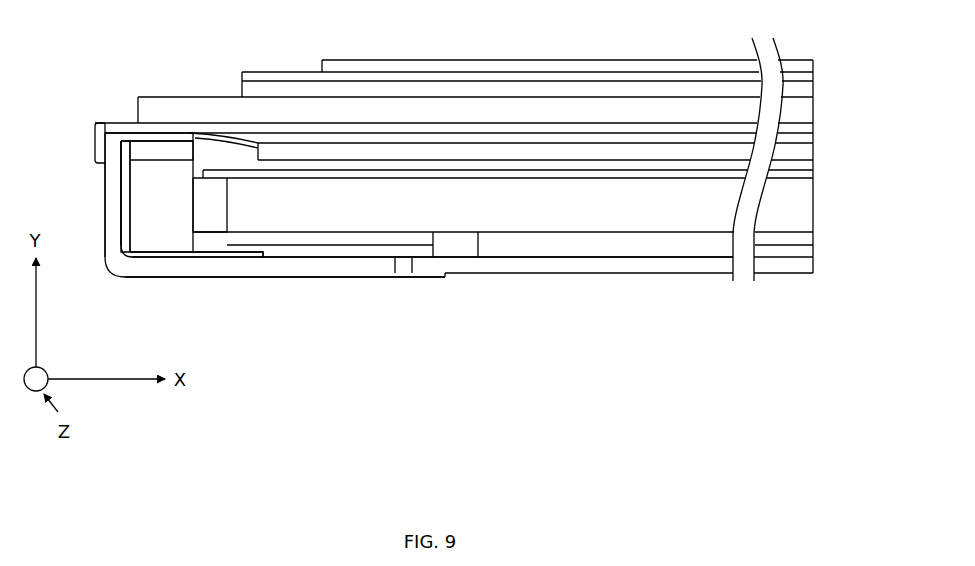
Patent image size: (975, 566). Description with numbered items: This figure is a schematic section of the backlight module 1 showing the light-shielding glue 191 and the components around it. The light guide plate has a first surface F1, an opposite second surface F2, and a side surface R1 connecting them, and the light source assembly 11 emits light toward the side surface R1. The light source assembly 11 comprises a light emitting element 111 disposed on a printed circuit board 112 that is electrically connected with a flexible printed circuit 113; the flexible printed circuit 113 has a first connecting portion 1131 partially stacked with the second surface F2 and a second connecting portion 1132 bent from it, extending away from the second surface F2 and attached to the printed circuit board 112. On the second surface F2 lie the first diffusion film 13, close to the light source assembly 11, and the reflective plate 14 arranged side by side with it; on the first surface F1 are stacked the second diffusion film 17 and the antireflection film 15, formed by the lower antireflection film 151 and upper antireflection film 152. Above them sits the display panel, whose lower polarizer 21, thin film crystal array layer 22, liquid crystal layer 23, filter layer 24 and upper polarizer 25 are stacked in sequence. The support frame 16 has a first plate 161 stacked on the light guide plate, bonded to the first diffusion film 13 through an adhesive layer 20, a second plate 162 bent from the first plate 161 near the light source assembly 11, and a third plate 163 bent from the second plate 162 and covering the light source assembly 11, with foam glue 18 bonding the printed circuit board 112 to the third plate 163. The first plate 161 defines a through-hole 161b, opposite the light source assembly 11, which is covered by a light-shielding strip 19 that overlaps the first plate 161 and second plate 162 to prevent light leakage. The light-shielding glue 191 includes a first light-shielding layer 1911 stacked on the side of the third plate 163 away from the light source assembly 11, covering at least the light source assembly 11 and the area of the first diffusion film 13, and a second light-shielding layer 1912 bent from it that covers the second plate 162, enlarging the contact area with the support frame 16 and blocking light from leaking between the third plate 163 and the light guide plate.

The backlight module 1 is at (832, 245).
The light source assembly 11 is at (260, 332).
The light emitting element 111 is at (205, 227).
The printed circuit board 112 is at (155, 227).
The flexible printed circuit 113 is at (238, 255).
The first connecting portion 1131 is at (138, 254).
The second connecting portion 1132 is at (128, 192).
The first diffusion film 13 is at (288, 236).
The reflective plate 14 is at (650, 240).
The antireflection film 15 is at (878, 140).
The lower antireflection film 151 is at (805, 164).
The upper antireflection film 152 is at (805, 148).
The support frame 16 is at (112, 270).
The first plate 161 is at (358, 268).
The through-hole 161b is at (397, 262).
The second plate 162 is at (104, 205).
The third plate 163 is at (165, 140).
The second diffusion film 17 is at (815, 176).
The foam glue 18 is at (133, 152).
The light-shielding strip 19 is at (425, 275).
The light-shielding glue 191 is at (67, 79).
The first light-shielding layer 1911 is at (131, 127).
The second light-shielding layer 1912 is at (103, 132).
The adhesive layer 20 is at (318, 250).
The lower polarizer 21 is at (805, 128).
The thin film crystal array layer 22 is at (805, 107).
The liquid crystal layer 23 is at (805, 85).
The filter layer 24 is at (803, 75).
The upper polarizer 25 is at (803, 58).
The first surface F1 is at (247, 173).
The second surface F2 is at (457, 238).
The side surface R1 is at (223, 192).